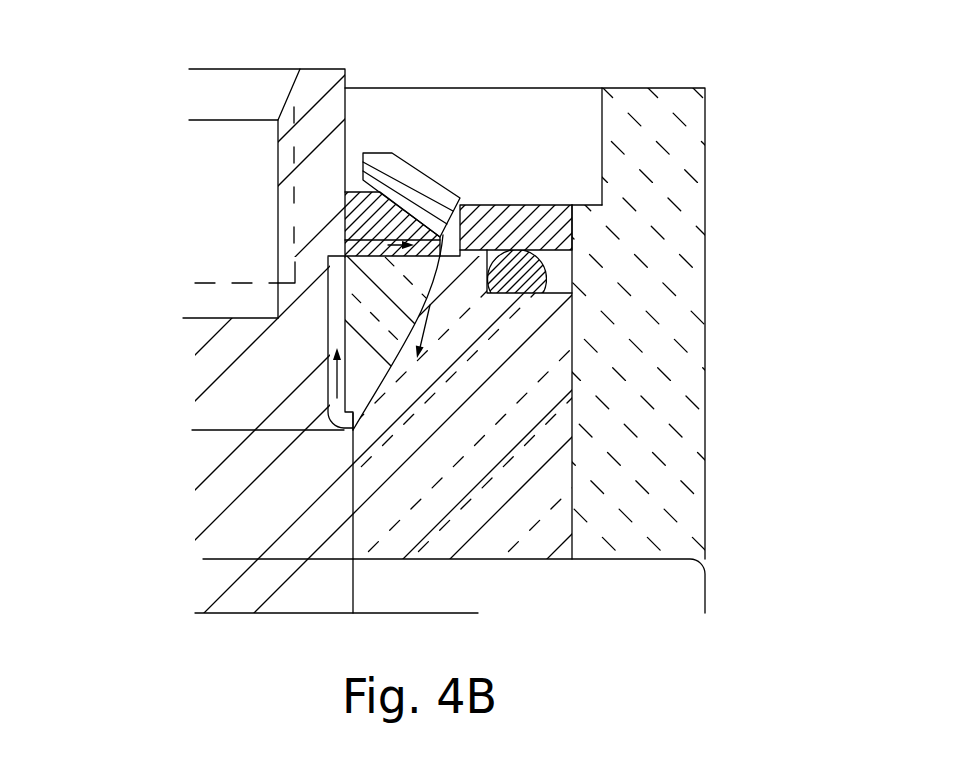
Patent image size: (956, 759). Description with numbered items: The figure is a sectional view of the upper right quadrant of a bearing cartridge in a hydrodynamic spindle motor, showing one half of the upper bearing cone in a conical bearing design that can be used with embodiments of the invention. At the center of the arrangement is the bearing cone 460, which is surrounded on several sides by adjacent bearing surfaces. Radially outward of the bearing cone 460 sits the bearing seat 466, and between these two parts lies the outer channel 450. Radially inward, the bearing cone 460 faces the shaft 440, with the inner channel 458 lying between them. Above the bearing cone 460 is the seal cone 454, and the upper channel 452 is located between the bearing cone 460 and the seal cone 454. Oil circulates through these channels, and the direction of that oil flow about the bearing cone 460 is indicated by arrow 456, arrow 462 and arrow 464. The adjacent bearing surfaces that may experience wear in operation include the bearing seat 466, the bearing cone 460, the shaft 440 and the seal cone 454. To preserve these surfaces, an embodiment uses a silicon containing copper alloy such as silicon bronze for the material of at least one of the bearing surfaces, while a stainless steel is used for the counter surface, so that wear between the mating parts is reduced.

The shaft 440 is at (315, 347).
The outer channel 450 is at (443, 293).
The upper channel 452 is at (443, 240).
The seal cone 454 is at (370, 210).
The arrow 456 is at (372, 228).
The inner channel 458 is at (334, 318).
The bearing cone 460 is at (348, 340).
The arrow 462 is at (330, 360).
The arrow 464 is at (438, 330).
The bearing seat 466 is at (500, 485).